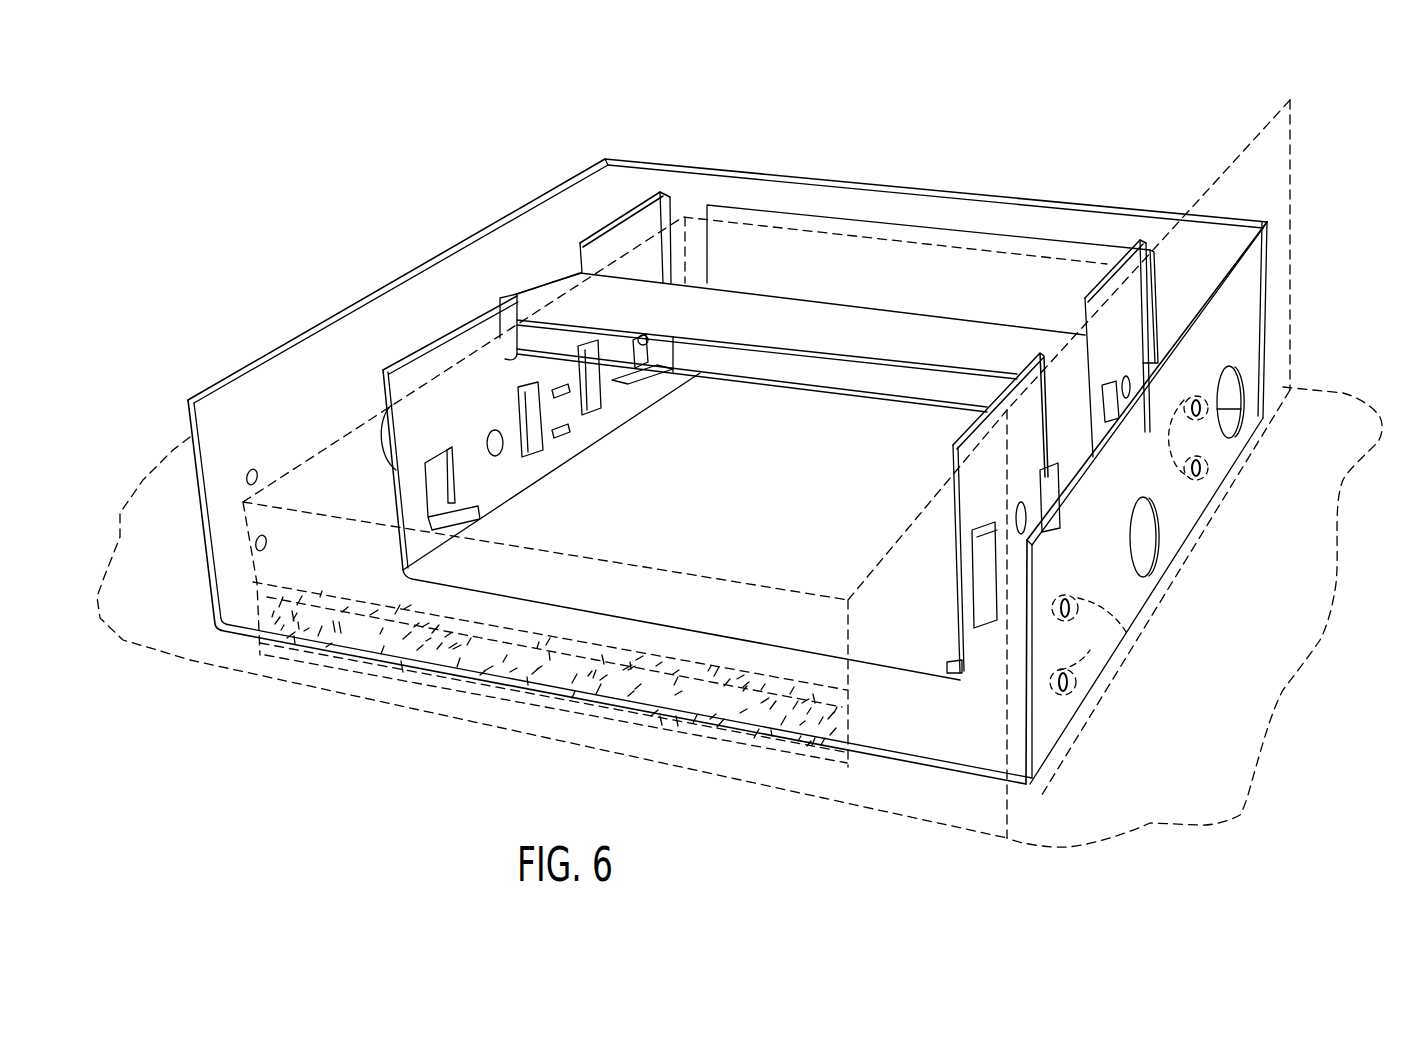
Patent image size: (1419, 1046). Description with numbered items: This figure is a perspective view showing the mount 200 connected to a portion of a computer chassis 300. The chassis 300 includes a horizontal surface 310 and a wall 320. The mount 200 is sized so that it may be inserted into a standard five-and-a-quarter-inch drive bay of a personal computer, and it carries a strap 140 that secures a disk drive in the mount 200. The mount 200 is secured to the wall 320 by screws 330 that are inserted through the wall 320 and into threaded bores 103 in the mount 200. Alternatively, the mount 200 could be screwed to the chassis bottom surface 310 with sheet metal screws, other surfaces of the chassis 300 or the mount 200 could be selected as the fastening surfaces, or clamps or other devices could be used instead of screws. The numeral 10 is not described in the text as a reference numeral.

The mount 200 is at (604, 160).
The inner carrier / mounting chassis 10 is at (340, 480).
The strap 140 is at (841, 342).
The bores 103 is at (256, 542).
The screws 330 is at (1161, 455).
The wall 320 is at (1260, 197).
The horizontal surface 310 is at (1350, 388).
The computer chassis 300 is at (1203, 792).